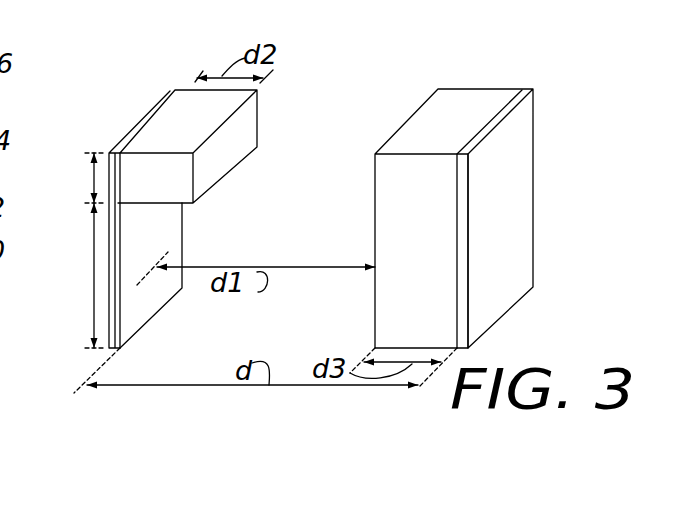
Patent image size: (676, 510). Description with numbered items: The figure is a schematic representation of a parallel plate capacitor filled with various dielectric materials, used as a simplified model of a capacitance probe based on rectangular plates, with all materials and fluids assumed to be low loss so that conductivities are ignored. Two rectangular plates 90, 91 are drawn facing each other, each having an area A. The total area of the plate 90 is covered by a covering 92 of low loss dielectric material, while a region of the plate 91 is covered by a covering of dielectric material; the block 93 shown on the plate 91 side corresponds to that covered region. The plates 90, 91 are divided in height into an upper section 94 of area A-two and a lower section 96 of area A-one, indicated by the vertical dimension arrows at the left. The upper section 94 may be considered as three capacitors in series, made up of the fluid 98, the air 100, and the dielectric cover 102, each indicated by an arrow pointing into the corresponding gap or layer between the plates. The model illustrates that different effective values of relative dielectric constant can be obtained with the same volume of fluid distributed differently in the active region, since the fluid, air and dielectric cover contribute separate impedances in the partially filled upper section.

The plate 90 is at (522, 96).
The plate 91 is at (119, 151).
The covering 92 is at (420, 118).
The second block 93 is at (238, 135).
The upper section 94 is at (93, 182).
The lower section 96 is at (93, 290).
The fluid 98 is at (217, 73).
The air 100 is at (332, 92).
The dielectric cover 102 is at (475, 73).